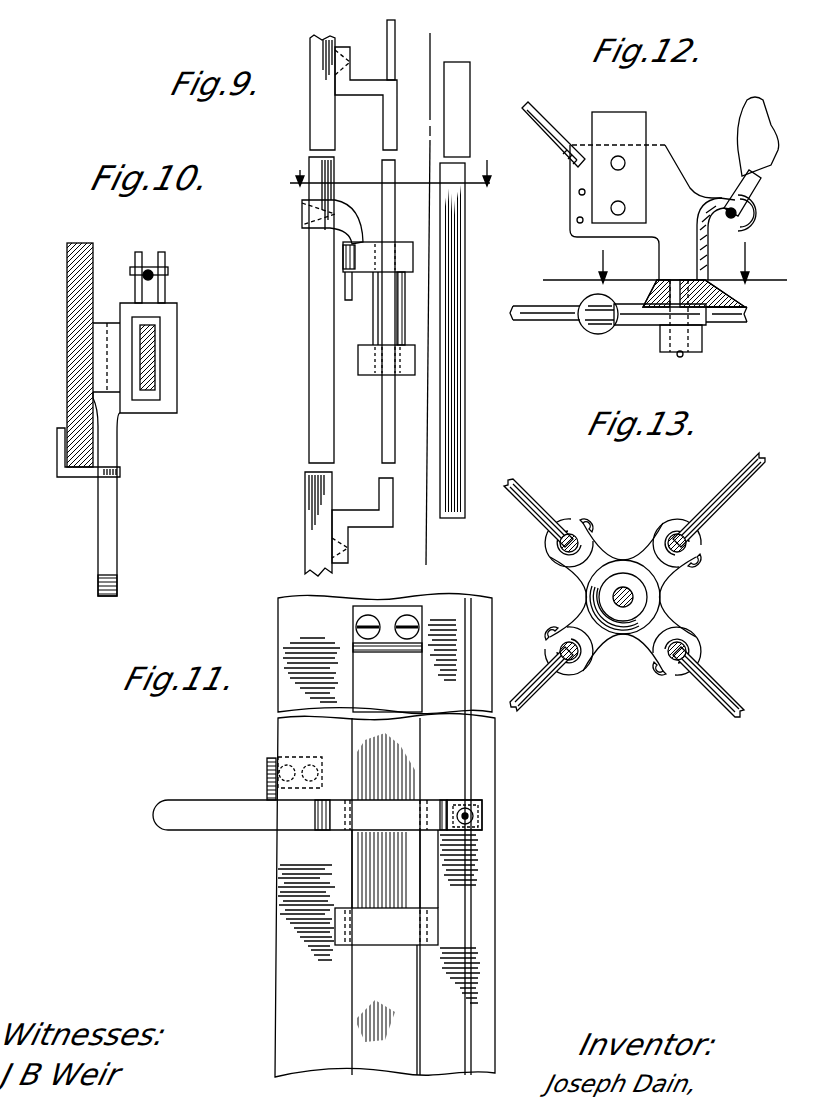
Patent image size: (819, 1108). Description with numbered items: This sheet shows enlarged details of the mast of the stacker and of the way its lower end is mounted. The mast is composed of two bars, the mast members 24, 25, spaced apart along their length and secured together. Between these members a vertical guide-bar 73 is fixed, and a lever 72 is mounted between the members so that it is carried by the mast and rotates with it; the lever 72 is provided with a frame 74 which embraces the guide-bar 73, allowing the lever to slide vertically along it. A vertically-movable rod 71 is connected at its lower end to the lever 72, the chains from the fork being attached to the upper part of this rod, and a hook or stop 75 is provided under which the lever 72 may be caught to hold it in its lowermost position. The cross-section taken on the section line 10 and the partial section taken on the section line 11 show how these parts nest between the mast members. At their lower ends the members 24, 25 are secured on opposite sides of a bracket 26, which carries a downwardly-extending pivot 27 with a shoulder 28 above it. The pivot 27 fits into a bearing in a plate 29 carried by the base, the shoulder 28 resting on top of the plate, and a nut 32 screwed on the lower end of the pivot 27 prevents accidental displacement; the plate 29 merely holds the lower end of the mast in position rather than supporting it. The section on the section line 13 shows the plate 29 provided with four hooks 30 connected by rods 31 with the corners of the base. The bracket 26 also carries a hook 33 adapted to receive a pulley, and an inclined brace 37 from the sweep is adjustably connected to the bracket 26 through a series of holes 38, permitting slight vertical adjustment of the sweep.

In FIG. 9, the section line 10 is at (392, 181).
In FIG. 9, the section line 11 is at (455, 32).
In FIG. 12, the section line 13 is at (666, 268).
In FIG. 9, the mast member 24 is at (461, 463).
In FIG. 12, the mast member 24 is at (617, 125).
In FIG. 9, the mast member 25 is at (318, 420).
In FIG. 10, the mast member 25 is at (130, 323).
In FIG. 11, the mast member 25 is at (292, 617).
In FIG. 12, the bracket 26 is at (663, 200).
In FIG. 12, the pivot 27 is at (680, 357).
In FIG. 13, the pivot 27 is at (623, 590).
In FIG. 12, the shoulder 28 is at (683, 272).
In FIG. 12, the plate 29 is at (720, 302).
In FIG. 13, the plate 29 is at (633, 628).
In FIG. 12, the hook 30 is at (627, 312).
In FIG. 13, the hook 30 is at (661, 538).
In FIG. 12, the rod 31 is at (543, 315).
In FIG. 13, the rod 31 is at (533, 510).
In FIG. 12, the nut 32 is at (663, 325).
In FIG. 12, the hook 33 is at (722, 195).
In FIG. 12, the inclined brace 37 is at (535, 102).
In FIG. 12, the holes 38 is at (578, 220).
In FIG. 9, the vertically-movable rod 71 is at (388, 32).
In FIG. 10, the vertically-movable rod 71 is at (150, 266).
In FIG. 11, the vertically-movable rod 71 is at (470, 650).
In FIG. 9, the lever 72 is at (350, 272).
In FIG. 10, the lever 72 is at (175, 342).
In FIG. 11, the lever 72 is at (215, 815).
In FIG. 9, the vertical guide-bar 73 is at (392, 173).
In FIG. 10, the vertical guide-bar 73 is at (156, 366).
In FIG. 11, the vertical guide-bar 73 is at (368, 993).
In FIG. 9, the frame 74 is at (400, 287).
In FIG. 11, the frame 74 is at (433, 877).
In FIG. 9, the hook or stop 75 is at (345, 218).
In FIG. 10, the hook or stop 75 is at (81, 476).
In FIG. 11, the hook or stop 75 is at (370, 665).